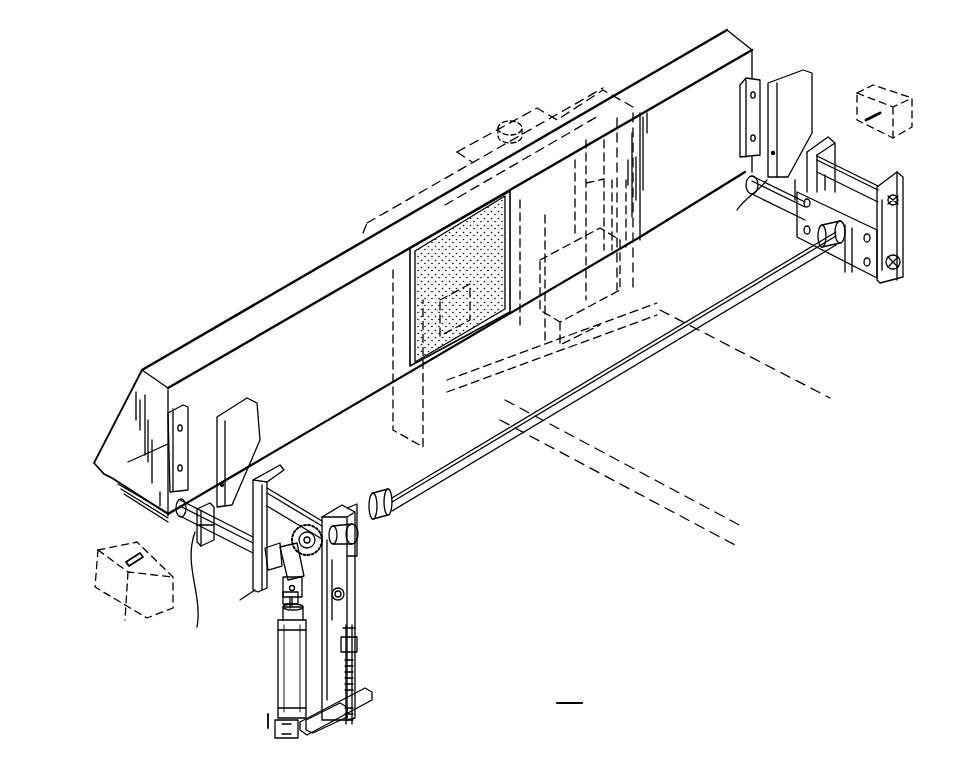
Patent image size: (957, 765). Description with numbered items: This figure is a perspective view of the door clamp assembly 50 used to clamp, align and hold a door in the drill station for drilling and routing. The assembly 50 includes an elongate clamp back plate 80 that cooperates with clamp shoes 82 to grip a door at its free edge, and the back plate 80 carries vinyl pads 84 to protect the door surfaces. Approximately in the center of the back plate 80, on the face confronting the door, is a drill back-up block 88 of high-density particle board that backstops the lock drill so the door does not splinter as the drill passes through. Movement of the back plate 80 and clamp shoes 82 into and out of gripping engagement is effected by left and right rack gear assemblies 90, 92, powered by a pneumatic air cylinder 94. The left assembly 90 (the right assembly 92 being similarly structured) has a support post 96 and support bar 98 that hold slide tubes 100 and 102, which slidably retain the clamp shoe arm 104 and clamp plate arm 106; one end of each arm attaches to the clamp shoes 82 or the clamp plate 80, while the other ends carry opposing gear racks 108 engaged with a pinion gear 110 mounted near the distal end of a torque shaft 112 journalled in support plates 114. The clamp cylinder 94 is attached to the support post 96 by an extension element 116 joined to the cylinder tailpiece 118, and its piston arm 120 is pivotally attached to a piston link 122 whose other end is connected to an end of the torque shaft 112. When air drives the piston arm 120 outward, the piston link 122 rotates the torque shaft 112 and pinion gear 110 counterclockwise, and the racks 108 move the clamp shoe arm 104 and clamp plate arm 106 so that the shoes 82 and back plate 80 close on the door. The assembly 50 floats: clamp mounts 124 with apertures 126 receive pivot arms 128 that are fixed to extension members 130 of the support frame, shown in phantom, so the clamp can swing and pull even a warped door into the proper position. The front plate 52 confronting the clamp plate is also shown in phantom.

The door clamp assembly 50 is at (216, 224).
The sled frame 52 is at (598, 502).
The clamp back plate 80 is at (346, 268).
The clamp shoes 82 is at (150, 512).
The vinyl pads 84 is at (116, 490).
The drill back-up block 88 is at (450, 222).
The left rack gear assembly 90 is at (370, 570).
The right rack gear assembly 92 is at (782, 234).
The pneumatic air cylinder 94 is at (280, 690).
The support post 96 is at (352, 605).
The support bar 98 is at (262, 574).
The slide tube 100 is at (315, 507).
The slide tube 102 is at (236, 548).
The clamp shoe arm 104 is at (270, 480).
The clamp plate arm 106 is at (176, 513).
The gear racks 108 is at (280, 575).
The pinion gear 110 is at (314, 552).
The torque shaft 112 is at (618, 368).
The support plates 114 is at (352, 552).
The extension element 116 is at (272, 732).
The tailpiece 118 is at (310, 724).
The piston arm 120 is at (282, 614).
The piston link 122 is at (352, 627).
The clamp mounts 124 is at (459, 411).
The apertures 126 is at (196, 532).
The pivot arms 128 is at (125, 556).
The extension members 130 is at (100, 592).